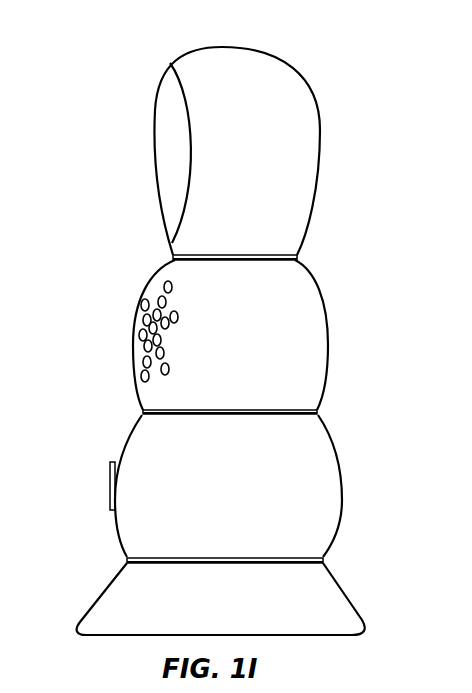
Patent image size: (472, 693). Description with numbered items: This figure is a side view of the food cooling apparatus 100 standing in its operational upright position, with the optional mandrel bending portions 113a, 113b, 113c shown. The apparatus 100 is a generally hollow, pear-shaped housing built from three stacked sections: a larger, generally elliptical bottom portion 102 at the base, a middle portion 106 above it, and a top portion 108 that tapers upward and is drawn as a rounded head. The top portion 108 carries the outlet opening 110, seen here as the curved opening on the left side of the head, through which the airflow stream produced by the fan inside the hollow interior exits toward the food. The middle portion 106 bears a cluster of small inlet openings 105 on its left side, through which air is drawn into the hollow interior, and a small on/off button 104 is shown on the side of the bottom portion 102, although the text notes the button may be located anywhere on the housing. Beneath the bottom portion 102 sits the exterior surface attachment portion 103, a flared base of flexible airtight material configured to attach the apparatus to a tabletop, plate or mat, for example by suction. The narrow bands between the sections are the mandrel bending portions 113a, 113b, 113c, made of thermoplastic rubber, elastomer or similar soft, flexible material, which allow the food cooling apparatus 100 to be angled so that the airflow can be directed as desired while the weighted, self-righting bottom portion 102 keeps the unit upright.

The food cooling apparatus 100 is at (379, 134).
The bottom portion 102 is at (343, 487).
The exterior surface attachment portion 103 is at (102, 587).
The on/off button 104 is at (112, 482).
The inlet opening 105 is at (138, 347).
The middle portion 106 is at (328, 330).
The top portion 108 is at (283, 60).
The outlet opening 110 is at (177, 145).
The mandrel bending portion 113a is at (299, 255).
The mandrel bending portion 113b is at (322, 408).
The mandrel bending portion 113c is at (323, 560).